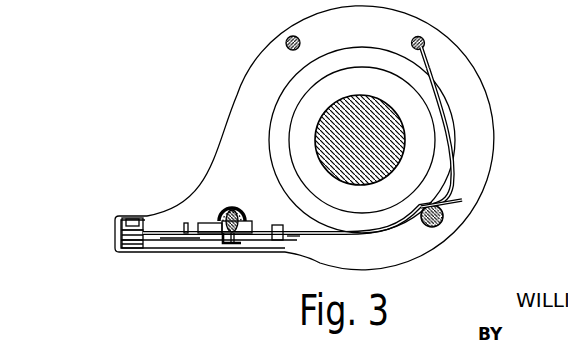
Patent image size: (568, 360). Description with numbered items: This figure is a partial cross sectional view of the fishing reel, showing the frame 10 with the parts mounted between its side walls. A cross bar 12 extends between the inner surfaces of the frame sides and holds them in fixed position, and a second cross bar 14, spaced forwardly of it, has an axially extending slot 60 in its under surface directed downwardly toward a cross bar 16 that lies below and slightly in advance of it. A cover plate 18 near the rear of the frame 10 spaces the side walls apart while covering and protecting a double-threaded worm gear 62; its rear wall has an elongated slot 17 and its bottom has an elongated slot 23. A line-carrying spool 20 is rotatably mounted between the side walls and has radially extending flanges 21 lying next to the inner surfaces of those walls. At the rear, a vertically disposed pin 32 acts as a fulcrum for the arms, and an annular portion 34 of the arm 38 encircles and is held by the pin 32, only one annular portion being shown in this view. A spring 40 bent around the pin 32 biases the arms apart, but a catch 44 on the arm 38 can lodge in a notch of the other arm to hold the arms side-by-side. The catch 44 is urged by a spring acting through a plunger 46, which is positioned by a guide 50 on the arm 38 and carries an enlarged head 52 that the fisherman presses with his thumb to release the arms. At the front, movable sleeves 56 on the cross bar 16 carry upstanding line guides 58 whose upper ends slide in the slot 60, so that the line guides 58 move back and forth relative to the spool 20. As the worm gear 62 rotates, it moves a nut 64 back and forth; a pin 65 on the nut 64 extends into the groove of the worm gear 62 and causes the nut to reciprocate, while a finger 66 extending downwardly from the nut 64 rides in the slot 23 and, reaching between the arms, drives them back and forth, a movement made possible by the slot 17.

The frame 10 is at (472, 181).
The cross bar 12 is at (289, 42).
The second cross bar 14 is at (424, 40).
The cross bar 16 is at (445, 225).
The elongated slot 17 is at (222, 222).
The cover plate 18 is at (228, 203).
The line-carrying spool 20 is at (402, 121).
The flanges 21 is at (398, 87).
The elongated slot 23 is at (229, 236).
The pin 32 is at (128, 217).
The annular portion 34 is at (150, 232).
The arm 38 is at (175, 237).
The spring 40 is at (117, 250).
The catch 44 is at (287, 237).
The plunger 46 is at (196, 233).
The guide 50 is at (214, 241).
The enlarged head 52 is at (182, 230).
The movable sleeves 56 is at (447, 215).
The line guides 58 is at (453, 146).
The slot 60 is at (430, 47).
The double-threaded worm gear 62 is at (242, 228).
The nut 64 is at (222, 208).
The pin 65 is at (233, 230).
The finger 66 is at (235, 236).